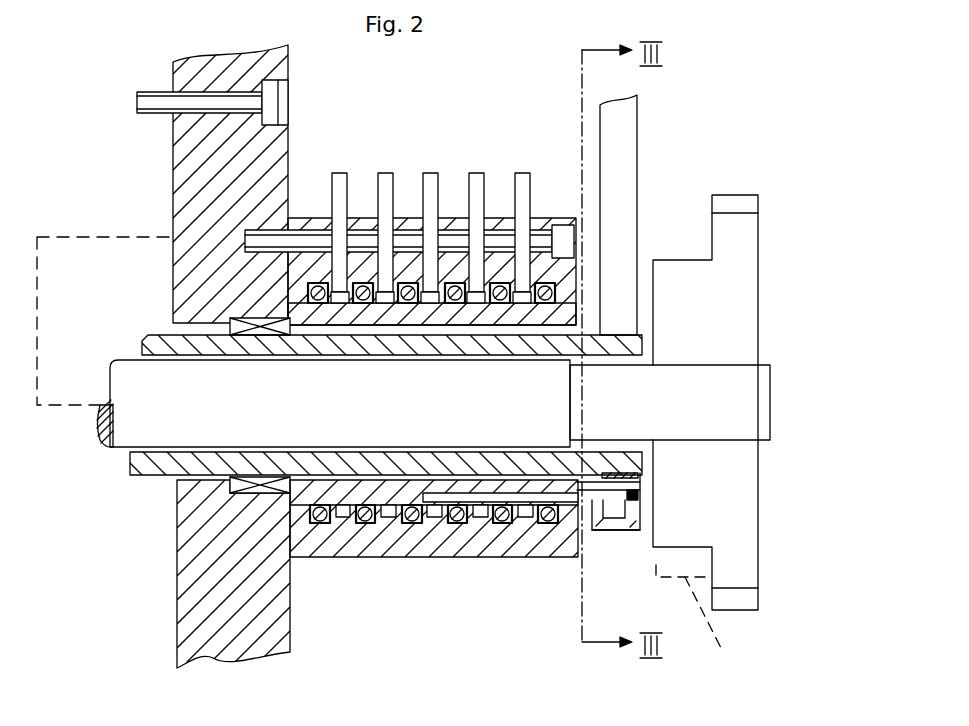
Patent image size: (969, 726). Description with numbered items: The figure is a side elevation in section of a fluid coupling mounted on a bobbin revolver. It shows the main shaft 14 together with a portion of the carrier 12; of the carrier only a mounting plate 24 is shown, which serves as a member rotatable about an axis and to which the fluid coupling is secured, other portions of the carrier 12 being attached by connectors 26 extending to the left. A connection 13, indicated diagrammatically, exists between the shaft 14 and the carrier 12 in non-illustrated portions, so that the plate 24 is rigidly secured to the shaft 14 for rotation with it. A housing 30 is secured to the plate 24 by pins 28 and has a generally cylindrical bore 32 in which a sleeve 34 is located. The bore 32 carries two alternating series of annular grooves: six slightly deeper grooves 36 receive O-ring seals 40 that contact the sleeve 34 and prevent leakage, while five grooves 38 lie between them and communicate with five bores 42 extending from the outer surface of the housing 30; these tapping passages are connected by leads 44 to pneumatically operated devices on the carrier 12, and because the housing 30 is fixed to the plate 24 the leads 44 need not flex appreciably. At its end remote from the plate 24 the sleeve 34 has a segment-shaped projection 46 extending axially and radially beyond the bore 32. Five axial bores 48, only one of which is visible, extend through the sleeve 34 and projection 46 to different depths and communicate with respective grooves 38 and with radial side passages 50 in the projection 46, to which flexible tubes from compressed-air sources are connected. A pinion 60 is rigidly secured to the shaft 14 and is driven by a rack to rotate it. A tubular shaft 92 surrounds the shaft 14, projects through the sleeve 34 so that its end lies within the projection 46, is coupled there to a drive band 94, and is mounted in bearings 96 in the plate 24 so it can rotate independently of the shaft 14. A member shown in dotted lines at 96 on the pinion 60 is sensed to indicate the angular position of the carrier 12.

The carrier 12 is at (94, 84).
The connection 13 is at (50, 237).
The main shaft 14 is at (702, 388).
The mounting plate 24 is at (175, 192).
The connectors 26 is at (150, 102).
The pins 28 is at (300, 237).
The housing 30 is at (325, 557).
The bore 32 is at (400, 500).
The sleeve 34 is at (332, 315).
The grooves 36 is at (447, 523).
The grooves 38 is at (425, 523).
The O-ring seals 40 is at (502, 523).
The bores 42 is at (351, 218).
The leads 44 is at (476, 197).
The projection 46 is at (622, 532).
The axial bores 48 is at (560, 496).
The side passages 50 is at (613, 532).
The pinion 60 is at (722, 238).
The tubular shaft 92 is at (152, 340).
The drive band 94 is at (624, 150).
The bearings 96 is at (135, 521).